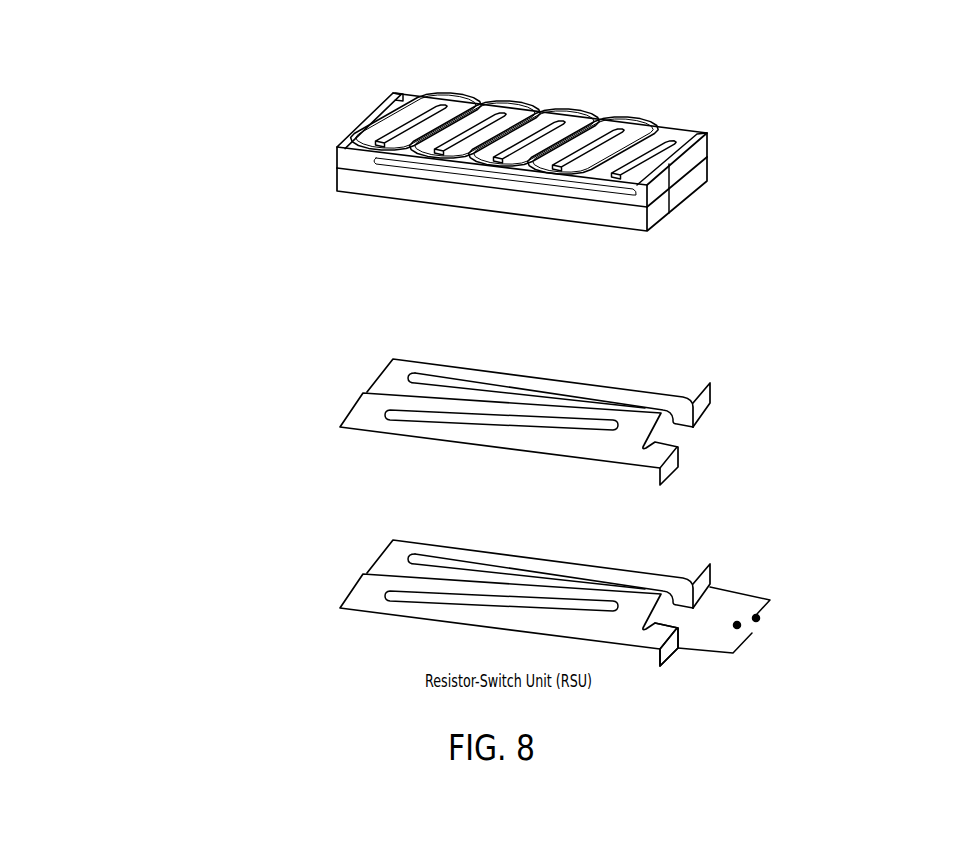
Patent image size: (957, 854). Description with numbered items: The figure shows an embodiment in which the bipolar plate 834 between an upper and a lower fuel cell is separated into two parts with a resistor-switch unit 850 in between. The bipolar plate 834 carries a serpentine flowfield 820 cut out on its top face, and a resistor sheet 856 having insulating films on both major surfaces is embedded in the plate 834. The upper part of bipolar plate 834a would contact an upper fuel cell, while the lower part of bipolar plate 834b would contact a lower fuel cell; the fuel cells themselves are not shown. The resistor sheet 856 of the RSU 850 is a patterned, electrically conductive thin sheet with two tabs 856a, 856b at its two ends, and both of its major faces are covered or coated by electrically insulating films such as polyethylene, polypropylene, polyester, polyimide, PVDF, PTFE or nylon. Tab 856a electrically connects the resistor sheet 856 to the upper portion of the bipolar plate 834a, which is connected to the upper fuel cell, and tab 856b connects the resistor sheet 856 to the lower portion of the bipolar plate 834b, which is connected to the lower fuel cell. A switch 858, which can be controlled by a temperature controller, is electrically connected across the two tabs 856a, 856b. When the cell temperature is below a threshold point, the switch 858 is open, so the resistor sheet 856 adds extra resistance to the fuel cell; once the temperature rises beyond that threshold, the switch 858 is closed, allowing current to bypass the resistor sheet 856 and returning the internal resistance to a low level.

The serpentine flowfield 820 is at (414, 99).
The bipolar plate 834 is at (503, 212).
The upper part of bipolar plate 834a is at (340, 143).
The lower part of bipolar plate 834b is at (340, 178).
The resistor sheet 856 is at (390, 175).
The tab 856a is at (705, 156).
The tab 856b is at (660, 213).
The resistor-switch unit (RSU) 850 is at (699, 541).
The switch 858 is at (770, 607).